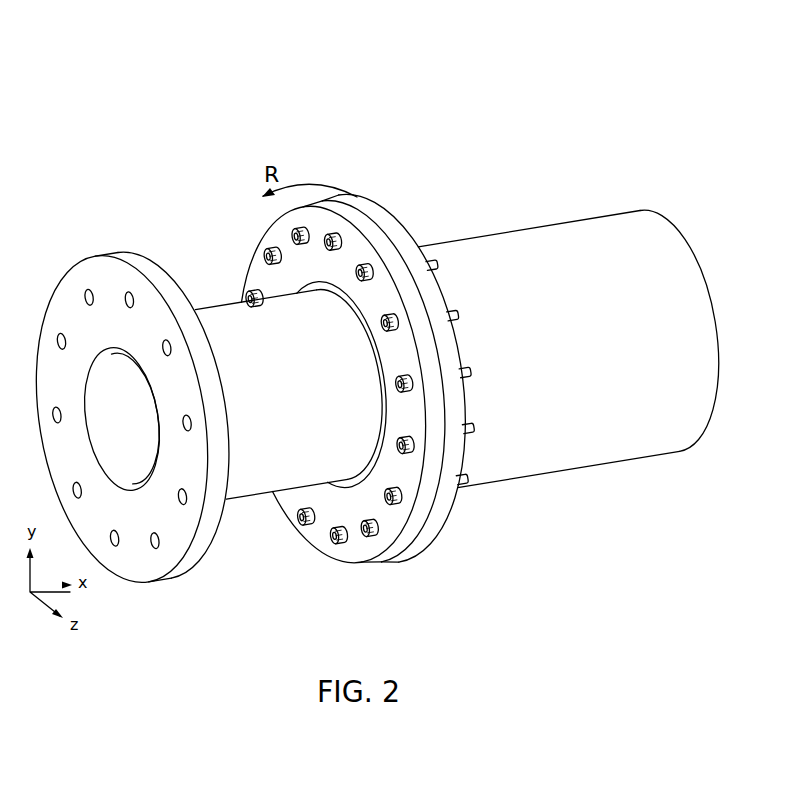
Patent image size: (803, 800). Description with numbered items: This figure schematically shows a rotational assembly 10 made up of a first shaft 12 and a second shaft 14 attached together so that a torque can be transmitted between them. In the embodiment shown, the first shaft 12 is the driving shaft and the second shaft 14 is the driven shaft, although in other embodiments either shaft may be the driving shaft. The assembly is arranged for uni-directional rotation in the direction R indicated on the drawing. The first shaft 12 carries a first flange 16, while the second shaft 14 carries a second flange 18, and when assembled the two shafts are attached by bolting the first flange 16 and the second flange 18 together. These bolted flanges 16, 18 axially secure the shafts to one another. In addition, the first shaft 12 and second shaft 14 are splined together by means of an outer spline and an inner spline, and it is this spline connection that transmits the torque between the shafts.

The rotational assembly 10 is at (366, 320).
The first shaft 12 is at (237, 323).
The second shaft 14 is at (587, 238).
The first flange 16 is at (399, 548).
The second flange 18 is at (426, 538).